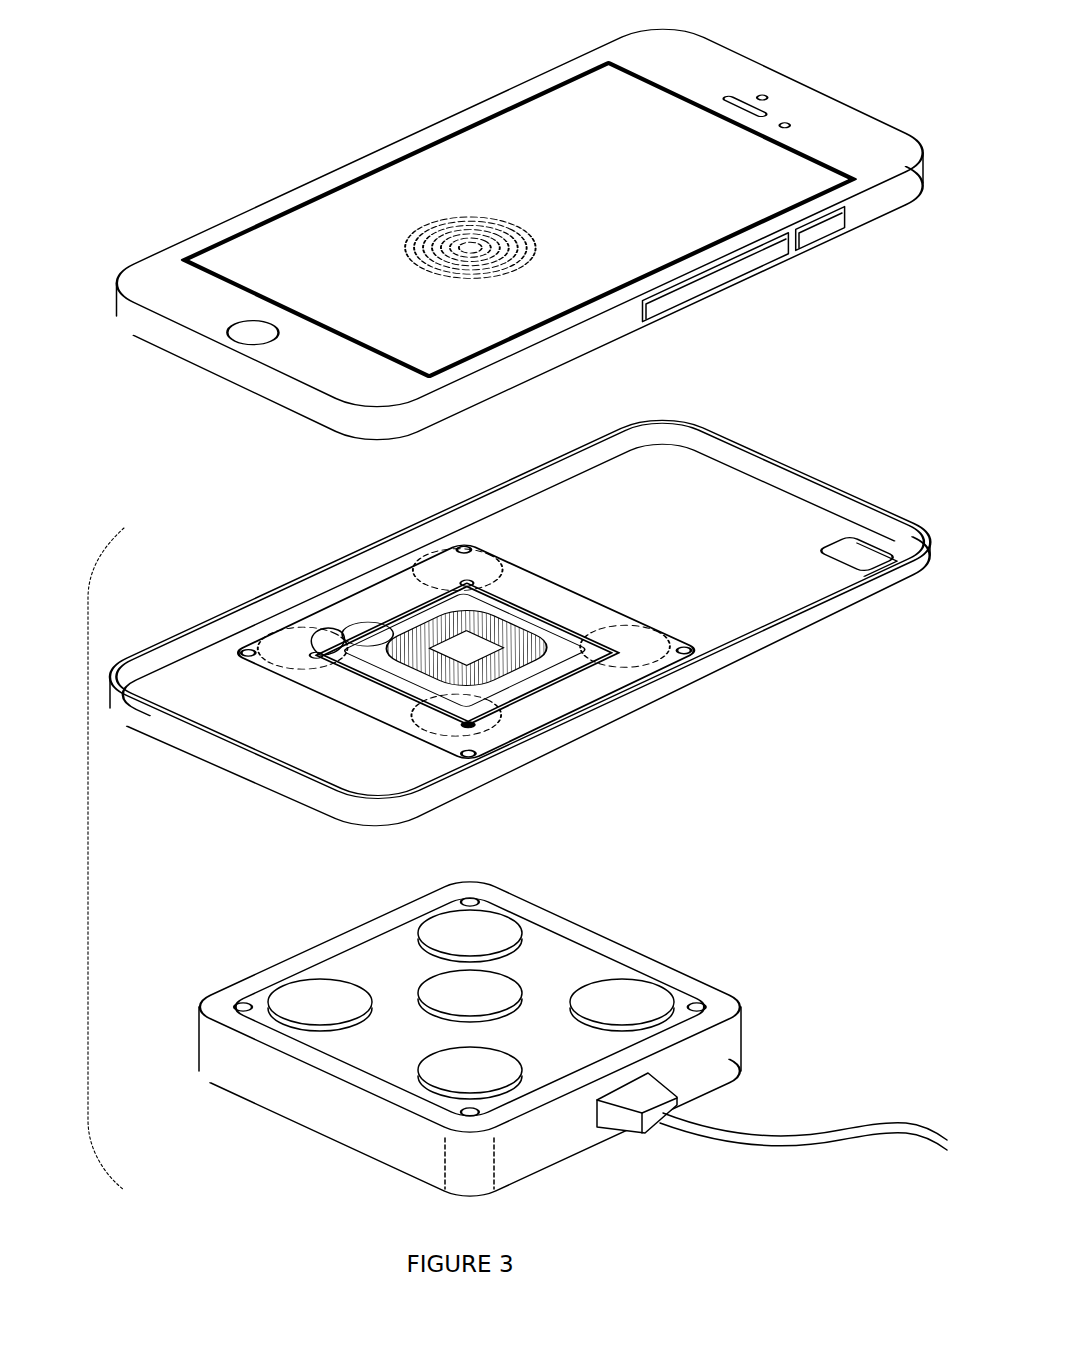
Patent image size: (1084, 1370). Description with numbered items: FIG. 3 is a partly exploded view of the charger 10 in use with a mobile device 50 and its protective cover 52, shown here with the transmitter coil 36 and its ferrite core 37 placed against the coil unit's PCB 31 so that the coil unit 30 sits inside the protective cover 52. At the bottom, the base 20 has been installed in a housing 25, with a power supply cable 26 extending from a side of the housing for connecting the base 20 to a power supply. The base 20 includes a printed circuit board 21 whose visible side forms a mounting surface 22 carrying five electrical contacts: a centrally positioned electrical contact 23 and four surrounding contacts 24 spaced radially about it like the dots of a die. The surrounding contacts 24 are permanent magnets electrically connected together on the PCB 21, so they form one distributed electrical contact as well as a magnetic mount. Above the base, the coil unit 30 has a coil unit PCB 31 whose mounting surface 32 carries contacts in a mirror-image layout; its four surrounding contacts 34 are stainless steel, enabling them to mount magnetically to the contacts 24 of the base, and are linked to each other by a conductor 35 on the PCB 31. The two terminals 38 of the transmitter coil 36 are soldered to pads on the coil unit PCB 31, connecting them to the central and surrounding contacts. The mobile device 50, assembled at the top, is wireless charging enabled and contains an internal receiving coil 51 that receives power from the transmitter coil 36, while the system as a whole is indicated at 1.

The electronic device 1 is at (143, 75).
The charger 10 is at (88, 866).
The base 20 is at (200, 968).
The printed circuit board 21 is at (347, 967).
The mounting surface 22 is at (369, 1052).
The centrally positioned electrical contact 23 is at (447, 988).
The surrounding contacts 24 is at (630, 1003).
The housing 25 is at (730, 1042).
The power supply cable 26 is at (783, 1135).
The coil unit 30 is at (187, 469).
The coil unit PCB 31 is at (257, 640).
The mounting surface 32 is at (559, 617).
The surrounding contacts 34 is at (513, 578).
The conductor 35 is at (550, 672).
The transmitter coil 36 is at (400, 623).
The ferrite core 37 is at (415, 610).
The terminals 38 is at (318, 648).
The mobile device 50 is at (840, 144).
The internal receiving coil 51 is at (458, 218).
The protective cover 52 is at (738, 520).